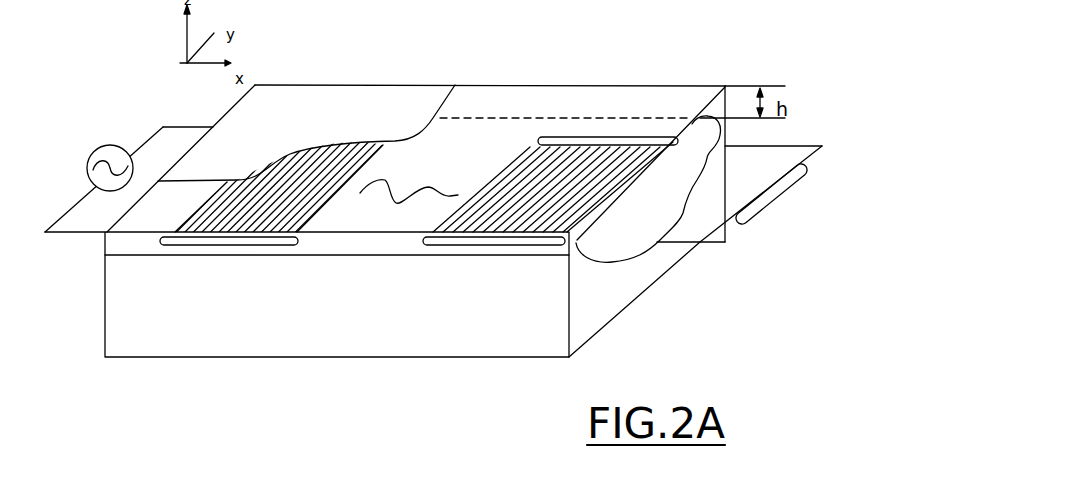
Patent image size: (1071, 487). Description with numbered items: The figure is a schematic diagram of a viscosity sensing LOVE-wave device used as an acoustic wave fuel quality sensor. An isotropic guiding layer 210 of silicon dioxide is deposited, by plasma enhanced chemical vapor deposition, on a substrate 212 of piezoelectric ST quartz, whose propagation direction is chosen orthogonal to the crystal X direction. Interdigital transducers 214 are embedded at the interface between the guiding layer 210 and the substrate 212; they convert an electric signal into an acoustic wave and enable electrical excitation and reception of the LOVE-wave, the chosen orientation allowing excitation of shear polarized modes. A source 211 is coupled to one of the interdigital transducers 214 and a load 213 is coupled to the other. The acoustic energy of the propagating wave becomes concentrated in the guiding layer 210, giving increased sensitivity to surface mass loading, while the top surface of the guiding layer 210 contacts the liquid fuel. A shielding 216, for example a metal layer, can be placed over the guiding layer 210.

The guiding layer 210 is at (574, 80).
The source 211 is at (98, 148).
The substrate 212 is at (616, 297).
The load 213 is at (767, 203).
The interdigital transducers 214 is at (180, 245).
The shielding 216 is at (365, 98).